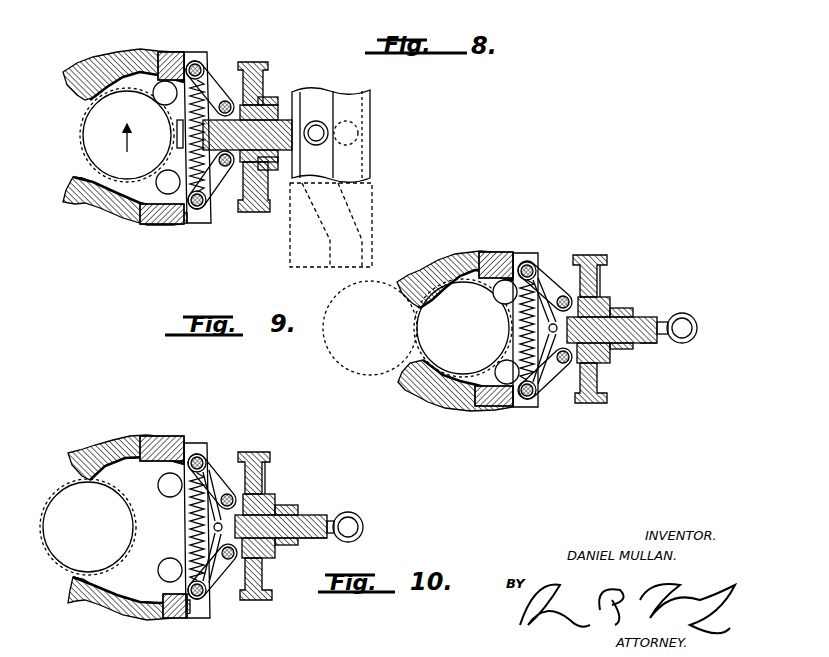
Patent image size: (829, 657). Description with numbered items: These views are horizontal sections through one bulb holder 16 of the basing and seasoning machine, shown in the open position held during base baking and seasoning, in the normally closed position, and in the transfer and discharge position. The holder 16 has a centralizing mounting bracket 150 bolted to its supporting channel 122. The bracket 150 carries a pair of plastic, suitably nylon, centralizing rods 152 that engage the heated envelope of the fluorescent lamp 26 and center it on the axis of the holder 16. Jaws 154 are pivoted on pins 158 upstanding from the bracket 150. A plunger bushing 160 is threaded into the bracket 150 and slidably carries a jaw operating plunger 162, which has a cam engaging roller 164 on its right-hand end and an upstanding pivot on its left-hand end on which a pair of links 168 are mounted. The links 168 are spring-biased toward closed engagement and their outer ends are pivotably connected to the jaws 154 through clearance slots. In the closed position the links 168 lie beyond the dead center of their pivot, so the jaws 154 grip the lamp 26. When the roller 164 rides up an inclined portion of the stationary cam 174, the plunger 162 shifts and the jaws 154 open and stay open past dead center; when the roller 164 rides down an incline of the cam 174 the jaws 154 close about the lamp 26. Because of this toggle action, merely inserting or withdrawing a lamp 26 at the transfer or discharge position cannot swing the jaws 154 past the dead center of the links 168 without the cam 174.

In FIG. 8, the bulb holder 16 is at (265, 216).
In FIG. 9, the bulb holder 16 is at (614, 372).
In FIG. 10, the bulb holder 16 is at (274, 466).
In FIG. 8, the fluorescent lamp 26 is at (83, 135).
In FIG. 9, the fluorescent lamp 26 is at (415, 322).
In FIG. 10, the fluorescent lamp 26 is at (70, 552).
In FIG. 8, the supporting channel 122 is at (262, 66).
In FIG. 9, the supporting channel 122 is at (605, 268).
In FIG. 10, the supporting channel 122 is at (265, 602).
In FIG. 8, the centralizing mounting bracket 150 is at (250, 212).
In FIG. 9, the centralizing mounting bracket 150 is at (550, 398).
In FIG. 10, the centralizing mounting bracket 150 is at (215, 520).
In FIG. 8, the centralizing rods 152 is at (165, 90).
In FIG. 9, the centralizing rods 152 is at (495, 282).
In FIG. 10, the centralizing rods 152 is at (165, 480).
In FIG. 8, the jaws 154 is at (85, 64).
In FIG. 9, the jaws 154 is at (405, 276).
In FIG. 10, the jaws 154 is at (80, 448).
In FIG. 8, the pins 158 is at (228, 100).
In FIG. 9, the pins 158 is at (568, 296).
In FIG. 10, the pins 158 is at (214, 528).
In FIG. 8, the plunger bushing 160 is at (274, 118).
In FIG. 9, the plunger bushing 160 is at (626, 318).
In FIG. 10, the plunger bushing 160 is at (282, 514).
In FIG. 8, the jaw operating plunger 162 is at (306, 102).
In FIG. 9, the jaw operating plunger 162 is at (658, 344).
In FIG. 10, the jaw operating plunger 162 is at (323, 515).
In FIG. 8, the cam engaging roller 164 is at (330, 130).
In FIG. 9, the cam engaging roller 164 is at (686, 314).
In FIG. 10, the cam engaging roller 164 is at (364, 527).
In FIG. 8, the links 168 is at (200, 62).
In FIG. 9, the links 168 is at (532, 263).
In FIG. 10, the links 168 is at (205, 456).
In FIG. 8, the stationary cam 174 is at (360, 160).